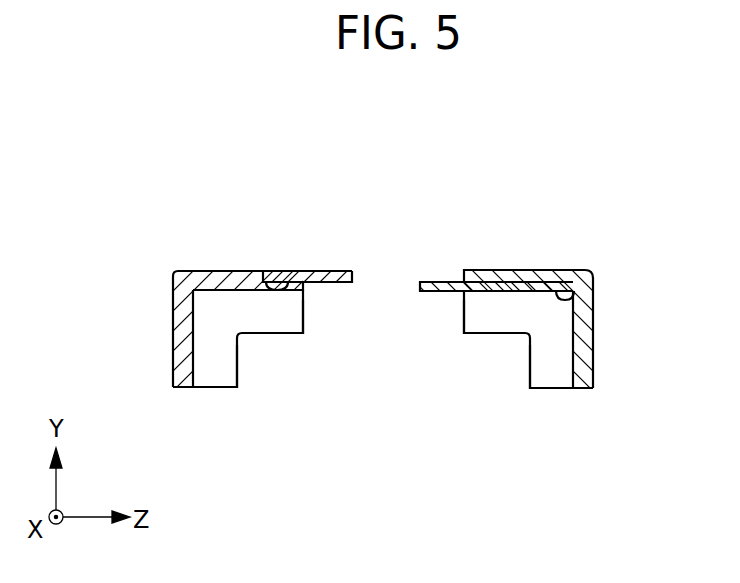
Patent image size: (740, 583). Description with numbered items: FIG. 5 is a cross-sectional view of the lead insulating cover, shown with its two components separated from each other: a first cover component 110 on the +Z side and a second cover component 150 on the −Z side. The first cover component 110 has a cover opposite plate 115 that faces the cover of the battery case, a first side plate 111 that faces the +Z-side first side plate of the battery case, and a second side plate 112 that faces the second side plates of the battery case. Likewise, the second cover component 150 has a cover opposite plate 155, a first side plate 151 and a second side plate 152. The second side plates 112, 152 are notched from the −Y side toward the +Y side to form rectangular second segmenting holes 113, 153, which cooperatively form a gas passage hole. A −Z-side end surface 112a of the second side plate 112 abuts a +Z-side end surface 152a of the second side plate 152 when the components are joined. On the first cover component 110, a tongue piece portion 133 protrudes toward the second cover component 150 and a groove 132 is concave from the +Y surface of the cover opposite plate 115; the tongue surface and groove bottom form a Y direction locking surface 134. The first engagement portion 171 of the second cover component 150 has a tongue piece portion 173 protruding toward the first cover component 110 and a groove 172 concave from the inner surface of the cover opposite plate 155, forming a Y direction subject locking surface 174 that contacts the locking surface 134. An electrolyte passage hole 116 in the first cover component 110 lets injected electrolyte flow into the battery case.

The first cover component 110 is at (605, 265).
The first side plate 111 is at (587, 333).
The second side plate 112 is at (553, 377).
The -Z-side end surface 112a is at (462, 315).
The second segmenting hole 113 is at (488, 337).
The cover opposite plate 115 is at (557, 270).
The electrolyte passage hole 116 is at (566, 303).
The groove 132 is at (513, 282).
The tongue piece portion 133 is at (450, 282).
The Y direction locking surface 134 is at (434, 281).
The second cover component 150 is at (145, 263).
The first side plate 151 is at (178, 332).
The second side plate 152 is at (212, 380).
The +Z-side end surface 152a is at (303, 310).
The second segmenting hole 153 is at (263, 337).
The cover opposite plate 155 is at (232, 271).
The first engagement portion (B) 171 is at (343, 153).
The groove 172 is at (279, 282).
The tongue piece portion 173 is at (330, 271).
The Y direction subject locking surface 174 is at (340, 284).